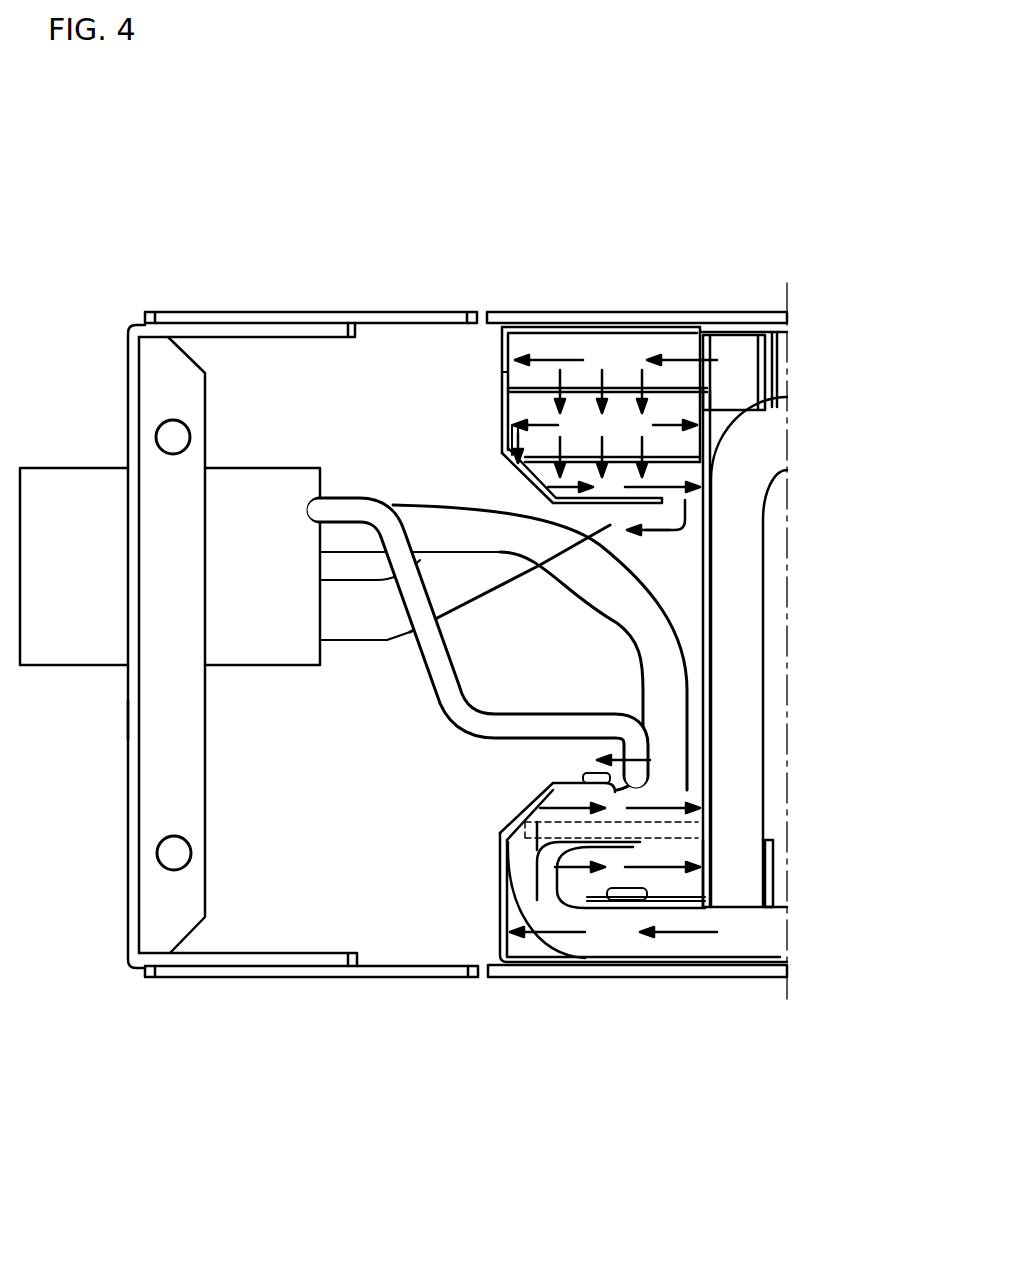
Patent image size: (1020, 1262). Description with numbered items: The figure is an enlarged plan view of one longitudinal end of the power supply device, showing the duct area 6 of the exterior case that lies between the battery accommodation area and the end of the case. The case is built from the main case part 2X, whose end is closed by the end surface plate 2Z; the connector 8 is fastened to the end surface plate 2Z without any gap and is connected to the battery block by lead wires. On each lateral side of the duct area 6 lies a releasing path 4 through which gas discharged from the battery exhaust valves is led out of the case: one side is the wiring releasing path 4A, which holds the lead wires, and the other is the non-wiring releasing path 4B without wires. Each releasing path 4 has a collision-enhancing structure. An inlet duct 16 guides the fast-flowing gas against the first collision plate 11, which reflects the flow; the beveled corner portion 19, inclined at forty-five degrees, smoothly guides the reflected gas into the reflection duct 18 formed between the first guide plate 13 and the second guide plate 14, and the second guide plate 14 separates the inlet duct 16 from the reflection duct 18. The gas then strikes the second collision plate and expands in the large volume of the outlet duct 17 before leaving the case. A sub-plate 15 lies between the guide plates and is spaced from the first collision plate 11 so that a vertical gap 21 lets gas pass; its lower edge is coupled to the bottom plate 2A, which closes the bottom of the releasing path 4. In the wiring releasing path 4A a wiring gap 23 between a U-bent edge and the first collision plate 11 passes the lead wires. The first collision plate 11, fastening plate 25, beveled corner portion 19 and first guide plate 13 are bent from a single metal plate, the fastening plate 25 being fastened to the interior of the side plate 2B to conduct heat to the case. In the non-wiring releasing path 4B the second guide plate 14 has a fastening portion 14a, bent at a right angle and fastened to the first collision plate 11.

The main case part 2X is at (267, 270).
The end surface plate 2Z is at (130, 722).
The bottom plate 2A is at (297, 818).
The side plate 2B is at (672, 318).
The releasing path 4 is at (888, 440).
The wiring releasing path 4A is at (712, 890).
The non-wiring releasing path 4B is at (710, 447).
The duct area 6 is at (265, 357).
The connector 8 is at (257, 640).
The first collision plate 11 is at (502, 373).
The first guide plate 13 is at (563, 468).
The second guide plate 14 is at (627, 390).
The fastening portion 14a is at (507, 372).
The sub-plate 15 is at (615, 465).
The inlet duct 16 is at (695, 355).
The outlet duct 17 is at (695, 414).
The reflection duct 18 is at (540, 681).
The beveled corner portion 19 is at (520, 487).
The vertical gap 21 is at (515, 445).
The wiring gap 23 is at (515, 916).
The fastening plate 25 is at (567, 327).